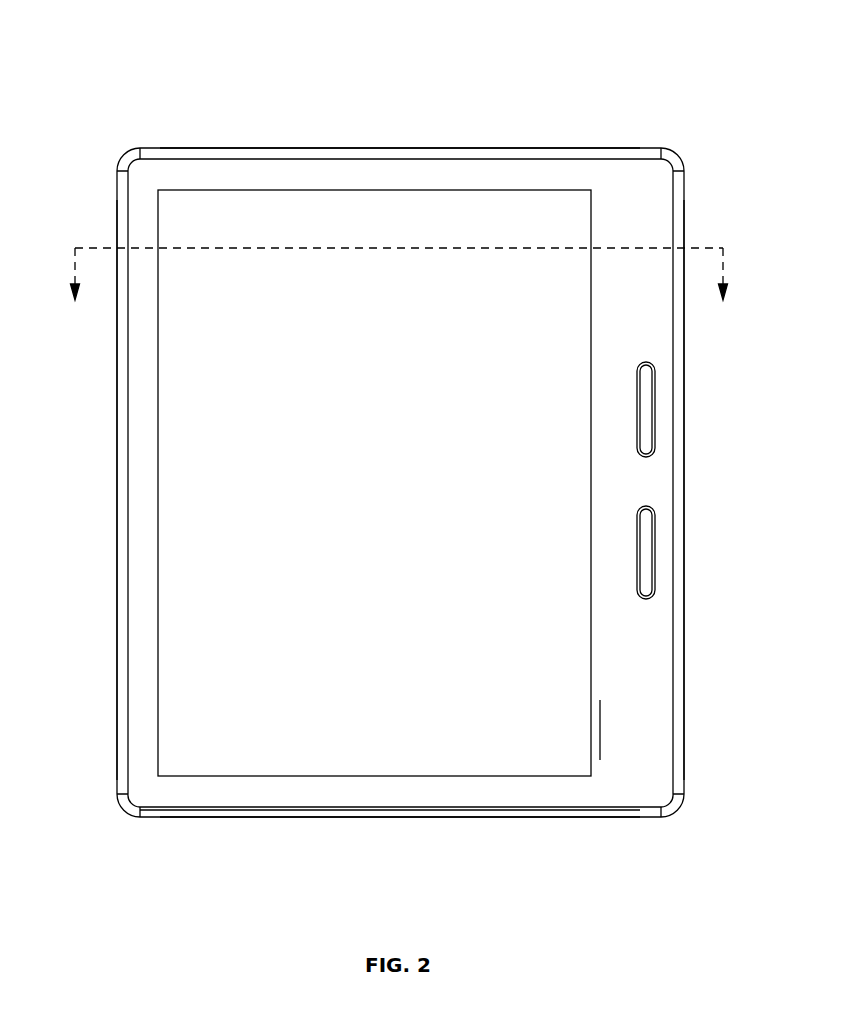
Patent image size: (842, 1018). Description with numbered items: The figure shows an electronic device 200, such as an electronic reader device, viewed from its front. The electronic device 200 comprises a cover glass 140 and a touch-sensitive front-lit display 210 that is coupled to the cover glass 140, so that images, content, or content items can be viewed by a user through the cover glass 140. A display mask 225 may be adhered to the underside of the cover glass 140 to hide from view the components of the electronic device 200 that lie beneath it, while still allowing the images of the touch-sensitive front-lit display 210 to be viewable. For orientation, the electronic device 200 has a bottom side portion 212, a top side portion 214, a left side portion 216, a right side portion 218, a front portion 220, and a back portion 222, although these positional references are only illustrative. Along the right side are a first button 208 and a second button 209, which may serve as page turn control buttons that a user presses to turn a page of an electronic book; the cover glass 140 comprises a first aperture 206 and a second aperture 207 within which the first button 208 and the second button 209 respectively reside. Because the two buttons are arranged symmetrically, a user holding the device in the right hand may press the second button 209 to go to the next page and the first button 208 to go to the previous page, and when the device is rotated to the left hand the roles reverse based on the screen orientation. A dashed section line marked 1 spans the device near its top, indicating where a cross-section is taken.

The electronic device 200 is at (176, 40).
The touch-sensitive front-lit display 210 is at (205, 425).
The cover glass 140 is at (384, 499).
The top side portion 214 is at (413, 147).
The bottom side portion 212 is at (388, 810).
The left side portion 216 is at (117, 645).
The right side portion 218 is at (677, 685).
The front portion 220 is at (544, 210).
The back portion 222 is at (303, 832).
The display mask 225 is at (627, 768).
The first aperture 206 is at (661, 380).
The second aperture 207 is at (661, 523).
The first button 208 is at (645, 440).
The second button 209 is at (645, 585).
The section line 1- 1 is at (399, 284).